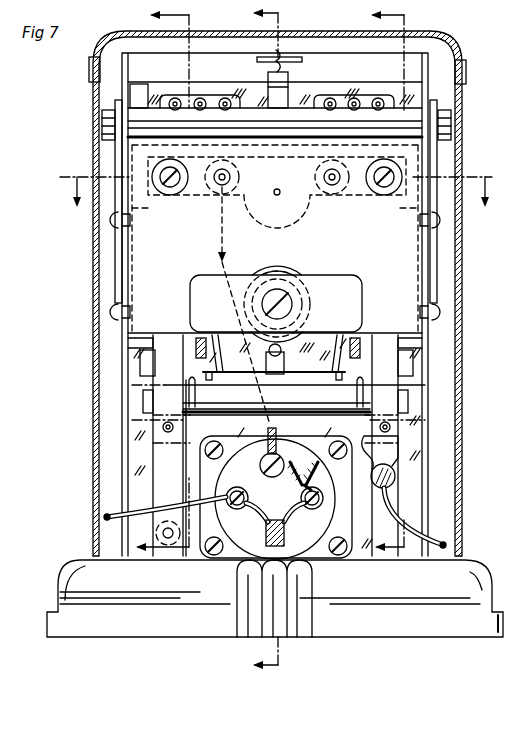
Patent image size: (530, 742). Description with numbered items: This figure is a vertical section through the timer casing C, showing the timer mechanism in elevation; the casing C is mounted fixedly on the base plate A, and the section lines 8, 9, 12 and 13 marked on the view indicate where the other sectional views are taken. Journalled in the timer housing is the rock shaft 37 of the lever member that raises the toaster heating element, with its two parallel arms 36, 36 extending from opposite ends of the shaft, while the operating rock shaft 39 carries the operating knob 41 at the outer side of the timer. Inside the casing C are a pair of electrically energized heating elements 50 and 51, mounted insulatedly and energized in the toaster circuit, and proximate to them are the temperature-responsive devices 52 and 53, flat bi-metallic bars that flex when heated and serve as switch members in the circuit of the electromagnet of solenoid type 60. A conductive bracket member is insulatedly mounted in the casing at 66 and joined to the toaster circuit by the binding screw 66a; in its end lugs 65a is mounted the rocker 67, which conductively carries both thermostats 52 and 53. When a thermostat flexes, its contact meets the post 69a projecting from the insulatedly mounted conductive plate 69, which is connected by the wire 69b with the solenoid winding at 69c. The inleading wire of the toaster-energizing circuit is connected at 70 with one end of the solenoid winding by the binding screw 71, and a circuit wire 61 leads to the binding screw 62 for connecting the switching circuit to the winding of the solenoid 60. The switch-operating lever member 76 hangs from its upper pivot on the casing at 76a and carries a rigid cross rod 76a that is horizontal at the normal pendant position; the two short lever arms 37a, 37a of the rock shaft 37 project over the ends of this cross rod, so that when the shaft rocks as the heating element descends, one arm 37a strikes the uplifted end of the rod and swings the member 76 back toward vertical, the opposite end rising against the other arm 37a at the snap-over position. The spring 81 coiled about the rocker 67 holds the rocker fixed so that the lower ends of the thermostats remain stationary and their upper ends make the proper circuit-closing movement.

The section line 8- 8 is at (280, 342).
The section line 9- 9 is at (278, 192).
The section line 12- 12 is at (167, 275).
The section line 13- 13 is at (398, 277).
The parallel arms 36 is at (115, 157).
The rock shaft 37 is at (400, 113).
The short lever arms 37a is at (200, 98).
The operating rock shaft 39 is at (283, 300).
The operating knob 41 is at (358, 283).
The heating element 50 is at (147, 342).
The heating element 51 is at (412, 337).
The temperature-responsive device 52 is at (157, 363).
The temperature-responsive device 53 is at (397, 360).
The solenoid 60 is at (305, 546).
The circuit wire 61 is at (298, 475).
The binding screw 62 is at (322, 500).
The end lugs 65a is at (150, 390).
The insulated mounting 66 is at (140, 97).
The binding screw 66a is at (394, 475).
The rocker 67 is at (328, 405).
The conductive plate 69 is at (158, 192).
The post 69a is at (178, 190).
The wire 69b is at (228, 252).
The solenoid winding connection 69c is at (268, 460).
The inleading wire connection 70 is at (284, 531).
The binding screw 71 is at (240, 509).
The switch-operating lever member 76 is at (290, 82).
The cross rod 76a is at (282, 53).
The spring 81 is at (190, 467).
The base plate A is at (378, 640).
The casing C is at (430, 252).